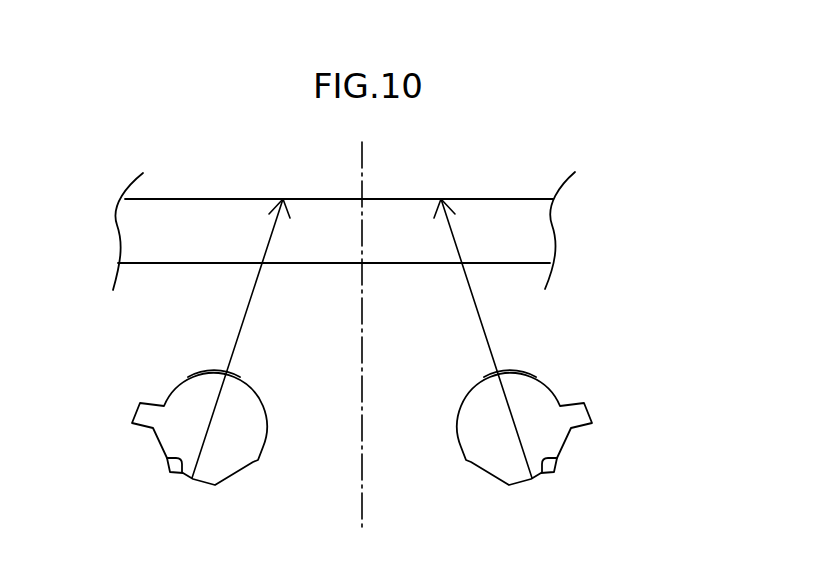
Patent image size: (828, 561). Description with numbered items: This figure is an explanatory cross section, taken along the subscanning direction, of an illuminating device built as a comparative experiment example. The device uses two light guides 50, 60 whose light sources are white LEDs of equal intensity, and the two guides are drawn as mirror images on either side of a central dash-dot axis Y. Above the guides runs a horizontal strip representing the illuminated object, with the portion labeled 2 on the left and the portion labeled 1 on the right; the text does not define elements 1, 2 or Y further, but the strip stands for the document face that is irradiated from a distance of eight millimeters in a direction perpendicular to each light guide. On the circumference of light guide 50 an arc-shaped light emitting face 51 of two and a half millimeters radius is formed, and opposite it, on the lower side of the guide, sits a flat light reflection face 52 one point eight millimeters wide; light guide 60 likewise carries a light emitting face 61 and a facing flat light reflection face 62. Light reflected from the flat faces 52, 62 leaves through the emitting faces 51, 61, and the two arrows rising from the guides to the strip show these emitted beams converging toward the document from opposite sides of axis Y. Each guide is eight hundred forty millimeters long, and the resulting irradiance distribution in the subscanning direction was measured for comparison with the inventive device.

The first light guide member 1 is at (508, 199).
The second light guide member 2 is at (177, 218).
The center axis Y is at (362, 150).
The light guide 50 is at (265, 443).
The light emitting face 51 is at (209, 372).
The flat light reflection face 52 is at (167, 460).
The light guide 60 is at (457, 443).
The light emitting face 61 is at (510, 372).
The flat light reflection face 62 is at (553, 457).